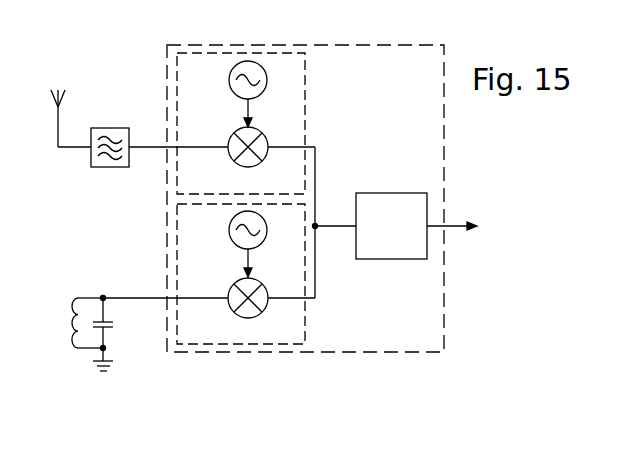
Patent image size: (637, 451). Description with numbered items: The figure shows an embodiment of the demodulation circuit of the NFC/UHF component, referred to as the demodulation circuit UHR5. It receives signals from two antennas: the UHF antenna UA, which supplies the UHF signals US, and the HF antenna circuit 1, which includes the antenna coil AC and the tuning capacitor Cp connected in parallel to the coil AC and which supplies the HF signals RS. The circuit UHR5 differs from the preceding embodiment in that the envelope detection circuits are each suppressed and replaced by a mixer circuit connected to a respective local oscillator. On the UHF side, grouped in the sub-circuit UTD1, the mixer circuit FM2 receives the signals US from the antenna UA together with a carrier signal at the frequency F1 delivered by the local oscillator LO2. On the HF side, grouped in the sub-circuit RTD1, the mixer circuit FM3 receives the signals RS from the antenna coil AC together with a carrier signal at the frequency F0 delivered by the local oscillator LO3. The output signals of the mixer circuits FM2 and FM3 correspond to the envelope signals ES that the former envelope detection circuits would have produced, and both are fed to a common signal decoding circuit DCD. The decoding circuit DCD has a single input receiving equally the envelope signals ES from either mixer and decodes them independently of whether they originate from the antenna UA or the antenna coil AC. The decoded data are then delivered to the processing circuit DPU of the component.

The HF antenna circuit 1 is at (90, 305).
The UHF antenna UA is at (58, 107).
The UHF signal US is at (178, 140).
The UHF demodulation circuit UTD1 is at (187, 53).
The local oscillator LO2 is at (224, 80).
The carrier frequency F1 is at (239, 113).
The mixer circuit FM2 is at (251, 161).
The demodulation circuit UHR5 is at (421, 74).
The signal decoding circuit DCD is at (415, 238).
The envelope signal ES is at (335, 218).
The processing circuit DPU is at (478, 227).
The local oscillator LO3 is at (224, 230).
The HF carrier frequency F0 is at (239, 263).
The mixer circuit FM3 is at (248, 311).
The HF demodulation circuit RTD1 is at (182, 344).
The HF signal RS is at (165, 290).
The antenna coil AC is at (68, 323).
The tuning capacitor Cp is at (120, 329).